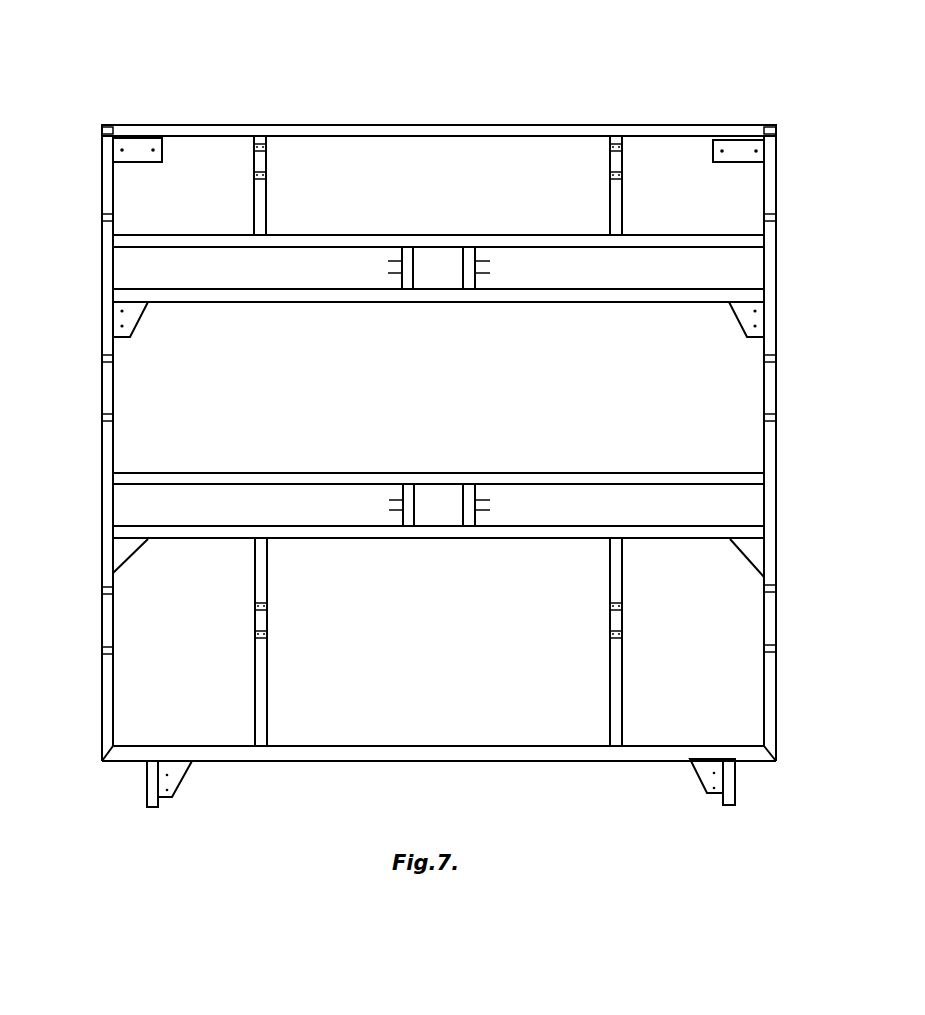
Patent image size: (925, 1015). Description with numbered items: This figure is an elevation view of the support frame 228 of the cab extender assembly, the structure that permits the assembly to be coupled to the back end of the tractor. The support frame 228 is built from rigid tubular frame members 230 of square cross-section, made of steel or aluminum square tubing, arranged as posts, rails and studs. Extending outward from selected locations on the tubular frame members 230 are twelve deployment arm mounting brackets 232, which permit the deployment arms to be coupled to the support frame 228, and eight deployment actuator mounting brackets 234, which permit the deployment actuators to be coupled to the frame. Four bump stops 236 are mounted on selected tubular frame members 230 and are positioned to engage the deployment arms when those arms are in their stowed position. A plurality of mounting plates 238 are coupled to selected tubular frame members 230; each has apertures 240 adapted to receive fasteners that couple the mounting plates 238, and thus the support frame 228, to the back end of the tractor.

The support frame 228 is at (100, 78).
The tubular frame members 230 is at (672, 125).
The deployment arm mounting brackets 232 is at (100, 130).
The deployment actuator mounting brackets 234 is at (485, 498).
The bump stops 236 is at (268, 160).
The mounting plates 238 is at (142, 148).
The apertures 240 is at (166, 800).